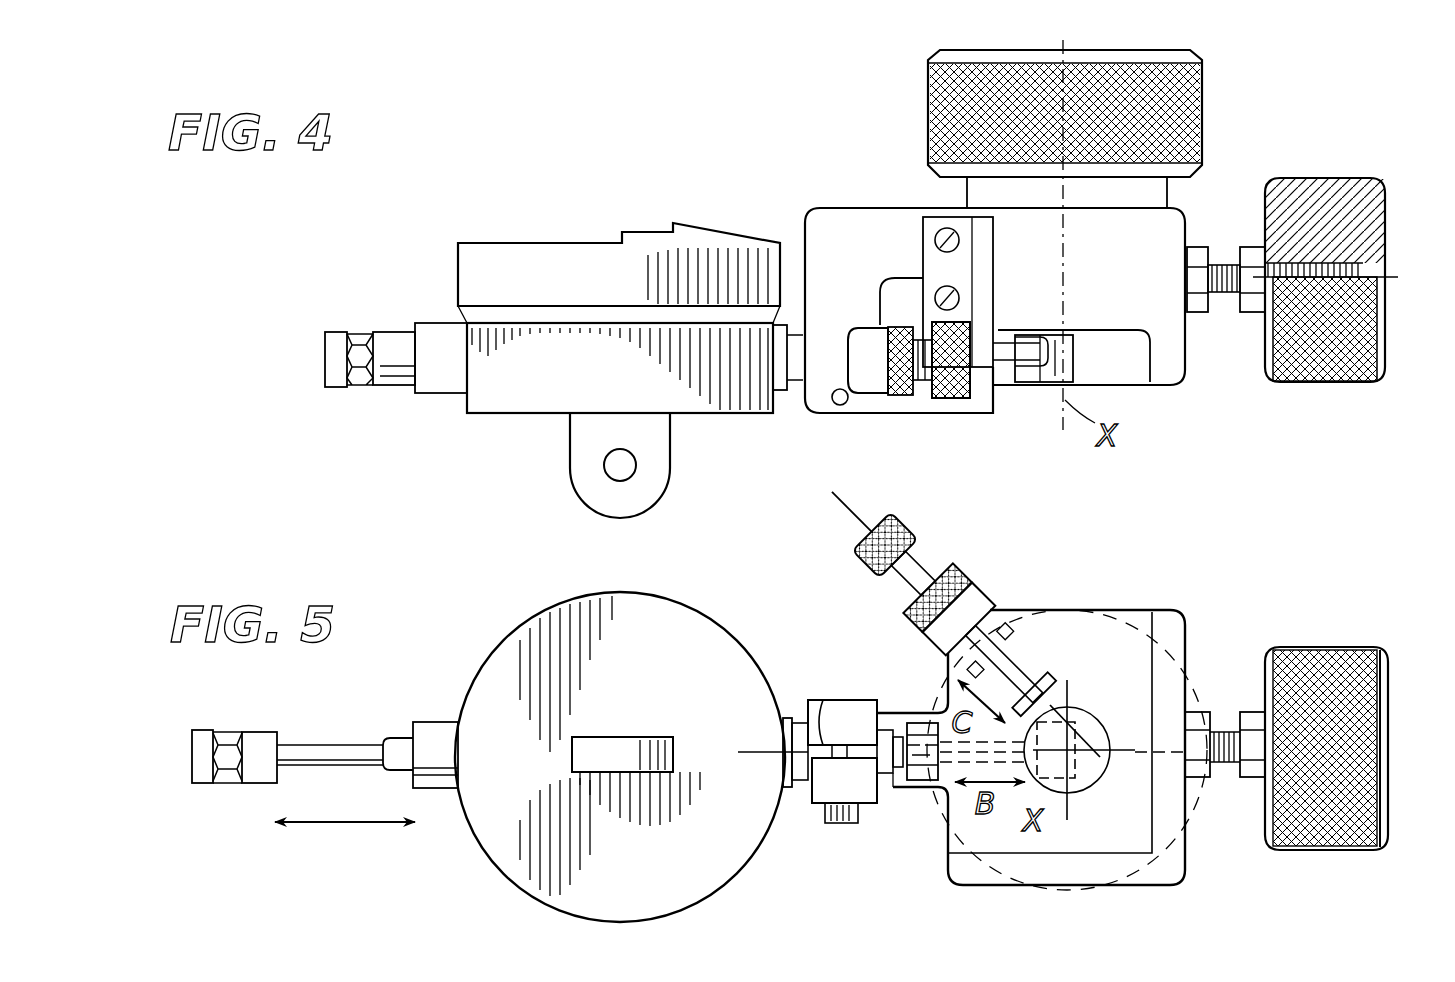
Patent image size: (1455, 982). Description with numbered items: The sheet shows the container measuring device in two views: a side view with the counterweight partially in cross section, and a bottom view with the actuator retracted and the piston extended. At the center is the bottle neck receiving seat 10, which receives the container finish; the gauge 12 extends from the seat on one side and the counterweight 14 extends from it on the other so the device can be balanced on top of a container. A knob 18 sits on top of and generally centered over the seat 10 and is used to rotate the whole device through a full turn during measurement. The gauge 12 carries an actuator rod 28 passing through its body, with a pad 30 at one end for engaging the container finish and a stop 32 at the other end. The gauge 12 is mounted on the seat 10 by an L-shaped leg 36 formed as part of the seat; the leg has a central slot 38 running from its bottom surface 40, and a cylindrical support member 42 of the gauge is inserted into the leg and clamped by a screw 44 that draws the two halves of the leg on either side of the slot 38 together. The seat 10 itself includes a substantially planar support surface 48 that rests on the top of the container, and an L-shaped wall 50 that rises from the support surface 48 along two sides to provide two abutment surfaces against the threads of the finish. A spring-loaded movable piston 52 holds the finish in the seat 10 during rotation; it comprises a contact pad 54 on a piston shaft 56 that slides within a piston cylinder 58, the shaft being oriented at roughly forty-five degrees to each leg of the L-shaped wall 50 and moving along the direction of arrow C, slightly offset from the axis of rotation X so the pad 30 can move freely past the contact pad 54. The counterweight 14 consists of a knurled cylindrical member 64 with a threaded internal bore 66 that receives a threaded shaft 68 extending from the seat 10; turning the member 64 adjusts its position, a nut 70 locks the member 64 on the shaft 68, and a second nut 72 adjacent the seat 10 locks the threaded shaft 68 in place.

In FIG. 4, the central seat 10 is at (865, 468).
In FIG. 5, the central seat 10 is at (1080, 590).
In FIG. 4, the gauge 12 is at (518, 215).
In FIG. 5, the gauge 12 is at (490, 628).
In FIG. 4, the counterweight 14 is at (1383, 163).
In FIG. 5, the counterweight 14 is at (1393, 655).
In FIG. 4, the knob 18 is at (925, 66).
In FIG. 5, the actuator rod 28 is at (313, 752).
In FIG. 4, the stop 32 is at (388, 387).
In FIG. 5, the stop 32 is at (258, 775).
In FIG. 4, the pad 30 is at (1044, 385).
In FIG. 5, the pad 30 is at (925, 770).
In FIG. 4, the L-shaped leg 36 is at (820, 222).
In FIG. 5, the L-shaped leg 36 is at (825, 782).
In FIG. 5, the central slot 38 is at (822, 715).
In FIG. 4, the bottom surface 40 is at (820, 418).
In FIG. 5, the bottom surface 40 is at (858, 715).
In FIG. 5, the cylindrical support member 42 is at (800, 767).
In FIG. 5, the screw 44 is at (842, 828).
In FIG. 4, the support surface 48 is at (1167, 368).
In FIG. 5, the support surface 48 is at (1135, 677).
In FIG. 4, the L-shaped wall 50 is at (1168, 372).
In FIG. 5, the L-shaped wall 50 is at (1047, 876).
In FIG. 4, the movable piston 52 is at (920, 404).
In FIG. 5, the movable piston 52 is at (967, 545).
In FIG. 4, the contact pad 54 is at (1028, 372).
In FIG. 5, the contact pad 54 is at (1050, 690).
In FIG. 4, the piston shaft 56 is at (1000, 362).
In FIG. 5, the piston shaft 56 is at (1005, 668).
In FIG. 5, the piston cylinder 58 is at (898, 592).
In FIG. 4, the cylindrical member 64 is at (1352, 384).
In FIG. 5, the cylindrical member 64 is at (1360, 746).
In FIG. 4, the threaded internal bore 66 is at (1362, 262).
In FIG. 4, the threaded shaft 68 is at (1222, 262).
In FIG. 4, the nut 70 is at (1250, 308).
In FIG. 5, the nut 70 is at (1248, 718).
In FIG. 4, the second nut 72 is at (1195, 312).
In FIG. 5, the second nut 72 is at (1196, 772).